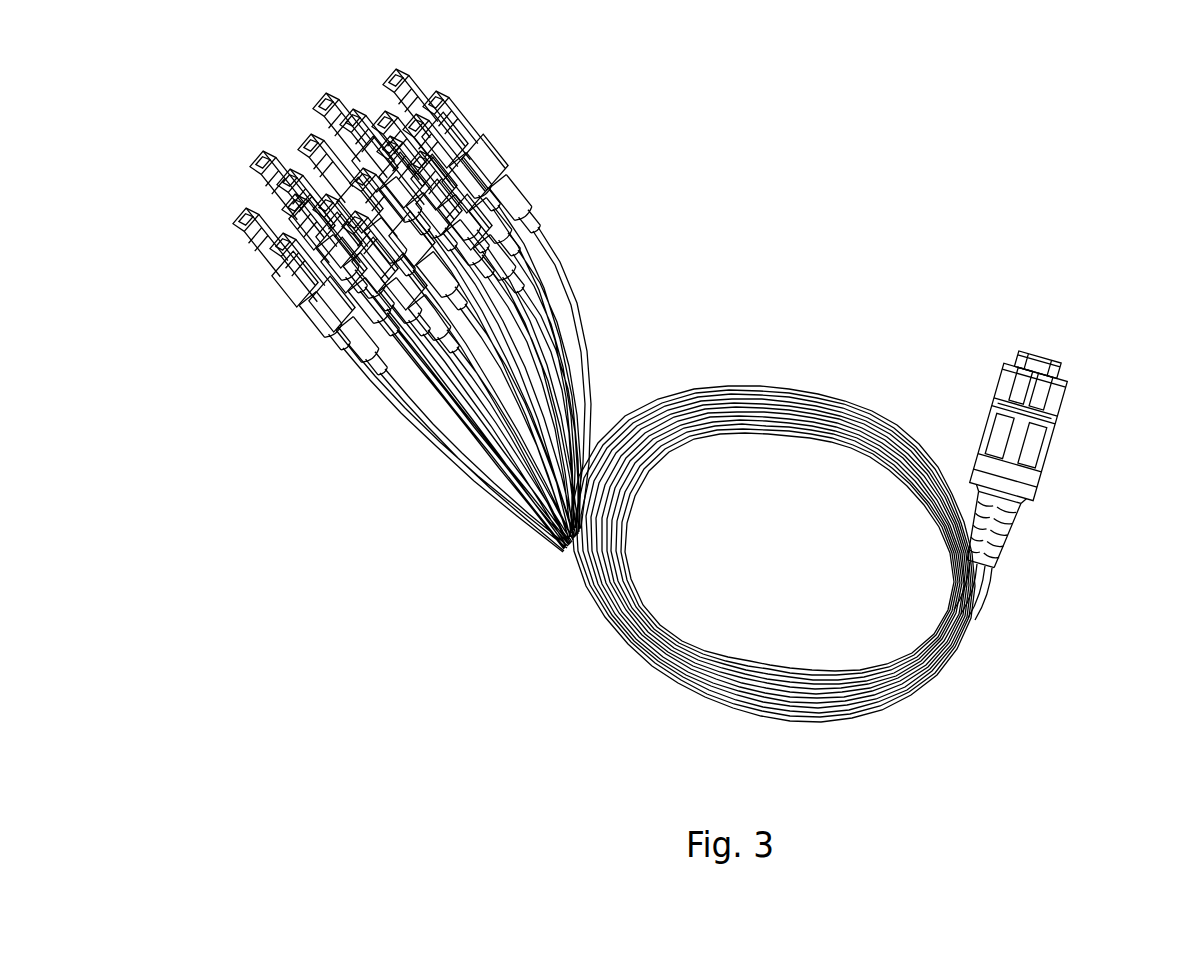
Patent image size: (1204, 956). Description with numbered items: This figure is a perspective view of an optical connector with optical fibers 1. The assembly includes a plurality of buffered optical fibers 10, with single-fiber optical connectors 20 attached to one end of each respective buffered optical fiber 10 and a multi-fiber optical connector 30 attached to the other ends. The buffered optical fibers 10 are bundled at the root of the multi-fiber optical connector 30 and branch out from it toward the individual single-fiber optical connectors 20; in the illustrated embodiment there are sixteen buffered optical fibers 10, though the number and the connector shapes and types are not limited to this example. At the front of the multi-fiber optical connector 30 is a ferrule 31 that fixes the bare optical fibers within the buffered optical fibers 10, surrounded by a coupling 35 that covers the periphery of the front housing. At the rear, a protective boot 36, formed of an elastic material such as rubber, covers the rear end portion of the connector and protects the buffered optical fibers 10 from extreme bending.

The optical connector with optical fibers 1 is at (1098, 152).
The buffered optical fiber 10 is at (588, 303).
The single-fiber optical connector 20 is at (439, 63).
The multi-fiber optical connector 30 is at (1041, 460).
The ferrule 31 is at (1060, 386).
The coupling 35 is at (985, 395).
The protective boot 36 is at (1010, 520).